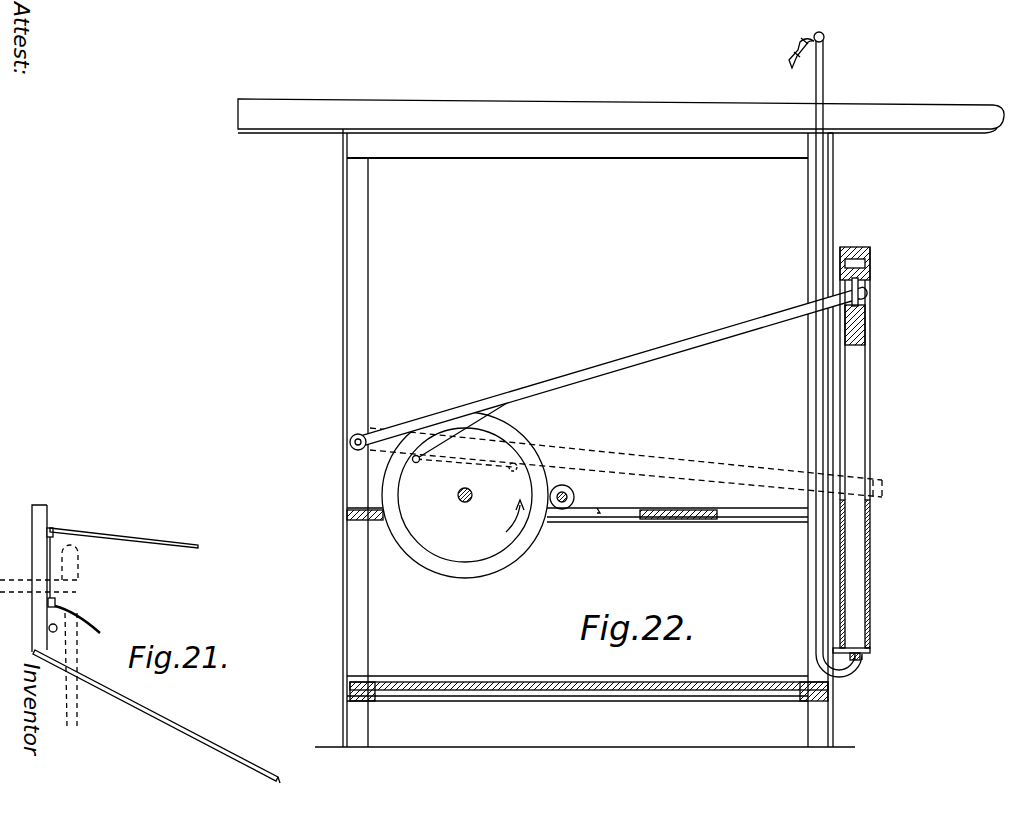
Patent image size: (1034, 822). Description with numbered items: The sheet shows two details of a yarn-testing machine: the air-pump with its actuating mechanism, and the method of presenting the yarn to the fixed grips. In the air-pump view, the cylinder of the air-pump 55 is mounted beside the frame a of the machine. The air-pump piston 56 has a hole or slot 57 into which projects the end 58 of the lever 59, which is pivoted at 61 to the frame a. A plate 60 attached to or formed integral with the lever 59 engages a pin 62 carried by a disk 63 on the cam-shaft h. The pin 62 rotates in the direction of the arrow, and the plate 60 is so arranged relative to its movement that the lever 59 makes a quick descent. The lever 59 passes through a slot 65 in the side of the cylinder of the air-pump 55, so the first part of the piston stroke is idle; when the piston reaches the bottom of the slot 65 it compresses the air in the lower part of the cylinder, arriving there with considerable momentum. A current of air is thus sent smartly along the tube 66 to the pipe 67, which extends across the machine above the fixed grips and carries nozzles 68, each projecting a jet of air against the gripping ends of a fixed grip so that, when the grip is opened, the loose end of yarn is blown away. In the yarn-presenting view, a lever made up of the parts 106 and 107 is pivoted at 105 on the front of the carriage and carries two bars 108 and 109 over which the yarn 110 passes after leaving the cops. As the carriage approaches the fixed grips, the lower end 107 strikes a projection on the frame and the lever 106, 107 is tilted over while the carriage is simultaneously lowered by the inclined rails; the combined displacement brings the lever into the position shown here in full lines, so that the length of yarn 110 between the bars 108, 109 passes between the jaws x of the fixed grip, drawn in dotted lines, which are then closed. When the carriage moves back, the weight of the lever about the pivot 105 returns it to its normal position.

In FIG. 22, the air-pump 55 is at (870, 577).
In FIG. 22, the air-pump piston 56 is at (858, 328).
In FIG. 22, the hole or slot 57 is at (852, 285).
In FIG. 22, the end of the lever 58 is at (864, 297).
In FIG. 22, the lever 59 is at (609, 367).
In FIG. 22, the plate 60 is at (431, 437).
In FIG. 22, the pivot 61 is at (350, 444).
In FIG. 22, the pin 62 is at (412, 462).
In FIG. 22, the disk 63 is at (465, 495).
In FIG. 22, the slot 65 is at (846, 420).
In FIG. 22, the tube 66 is at (851, 668).
In FIG. 22, the pipe 67 is at (825, 38).
In FIG. 22, the nozzles 68 is at (783, 61).
In FIG. 22, the frame a is at (727, 149).
In FIG. 22, the cam-shaft h is at (460, 500).
In FIG. 21, the pivot 105 is at (58, 630).
In FIG. 21, the lever 106 is at (40, 617).
In FIG. 21, the lower end of the lever 107 is at (125, 698).
In FIG. 21, the bar 108 is at (53, 528).
In FIG. 21, the bar 109 is at (57, 602).
In FIG. 21, the yarn 110 is at (142, 538).
In FIG. 21, the jaws x is at (78, 582).